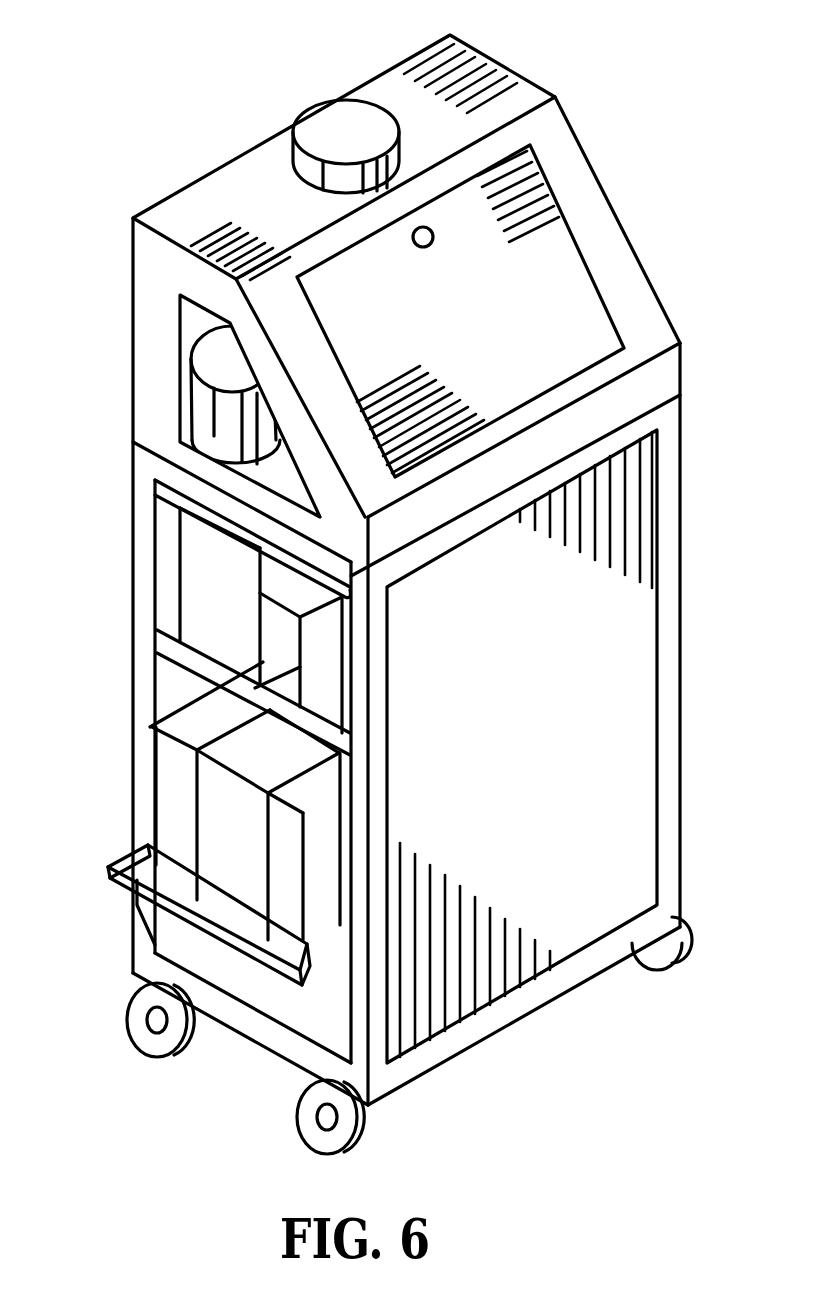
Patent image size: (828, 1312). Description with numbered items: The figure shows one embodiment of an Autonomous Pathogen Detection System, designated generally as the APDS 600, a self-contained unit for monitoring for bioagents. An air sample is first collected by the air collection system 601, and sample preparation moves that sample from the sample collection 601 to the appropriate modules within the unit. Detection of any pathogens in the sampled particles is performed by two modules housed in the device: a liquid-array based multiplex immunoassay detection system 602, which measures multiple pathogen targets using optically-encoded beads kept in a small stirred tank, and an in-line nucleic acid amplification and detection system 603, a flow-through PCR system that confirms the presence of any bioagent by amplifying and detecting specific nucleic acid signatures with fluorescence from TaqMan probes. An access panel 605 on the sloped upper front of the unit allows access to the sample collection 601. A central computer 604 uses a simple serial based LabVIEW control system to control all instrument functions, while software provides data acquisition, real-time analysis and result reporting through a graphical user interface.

The Autonomous Pathogen Detection System 600 is at (556, 42).
The air collection system 601 is at (210, 364).
The liquid-array based multiplex immunoassay detection system 602 is at (212, 598).
The in-line nucleic acid amplification and detection system 603 is at (320, 655).
The central computer 604 is at (220, 813).
The access panel 605 is at (535, 240).